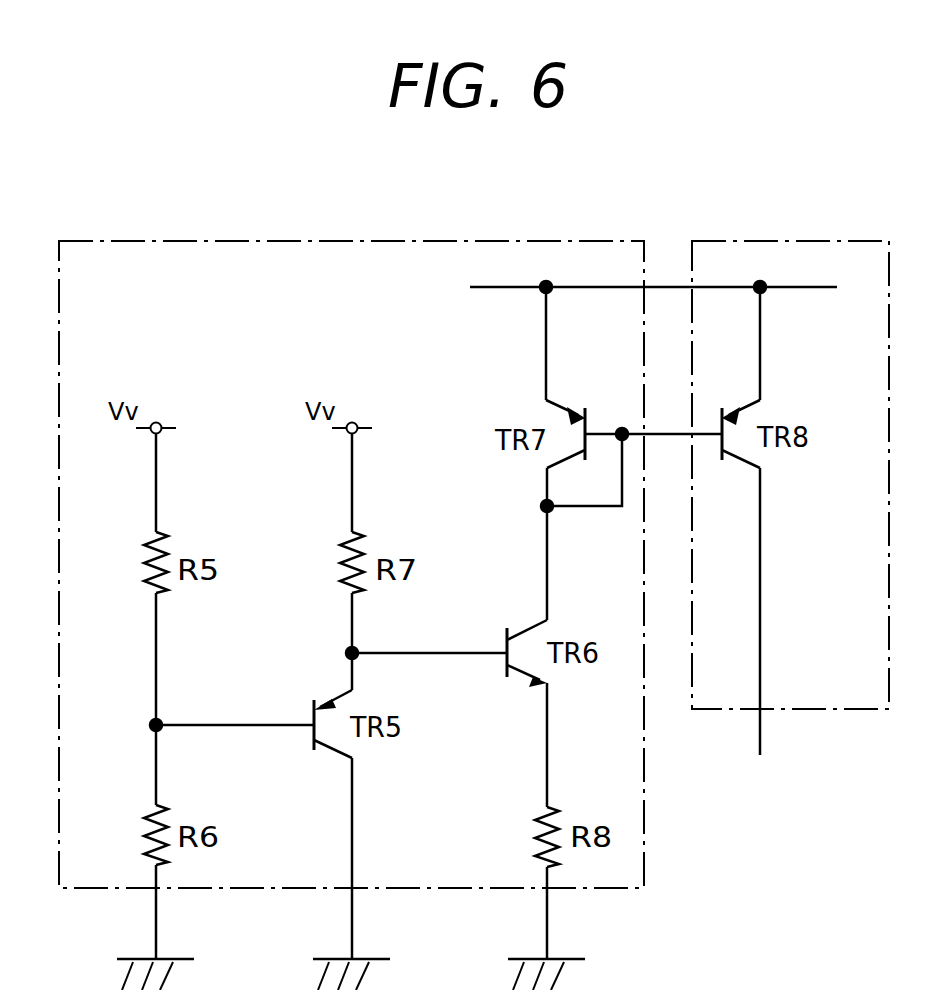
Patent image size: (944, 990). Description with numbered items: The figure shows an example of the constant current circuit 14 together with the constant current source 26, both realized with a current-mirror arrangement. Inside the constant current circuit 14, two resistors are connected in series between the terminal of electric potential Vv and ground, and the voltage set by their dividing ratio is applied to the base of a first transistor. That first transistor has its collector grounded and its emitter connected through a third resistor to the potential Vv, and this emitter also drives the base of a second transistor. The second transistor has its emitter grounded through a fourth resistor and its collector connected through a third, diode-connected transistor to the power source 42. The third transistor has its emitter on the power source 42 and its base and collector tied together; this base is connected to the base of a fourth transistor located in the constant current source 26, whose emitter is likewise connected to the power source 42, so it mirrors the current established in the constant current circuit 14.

The constant current circuit 14 is at (338, 241).
The power source 42 is at (665, 287).
The constant current source 26 is at (773, 241).